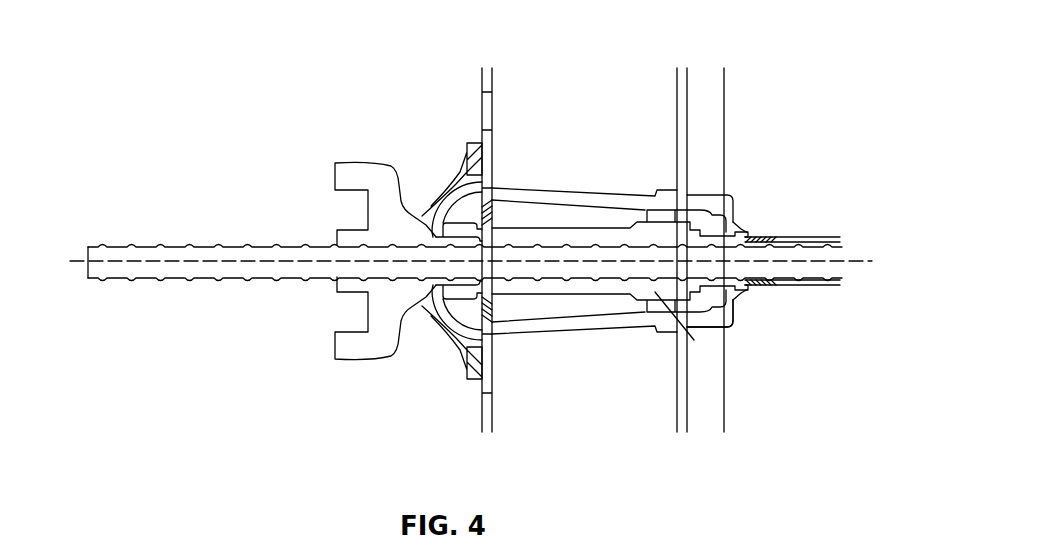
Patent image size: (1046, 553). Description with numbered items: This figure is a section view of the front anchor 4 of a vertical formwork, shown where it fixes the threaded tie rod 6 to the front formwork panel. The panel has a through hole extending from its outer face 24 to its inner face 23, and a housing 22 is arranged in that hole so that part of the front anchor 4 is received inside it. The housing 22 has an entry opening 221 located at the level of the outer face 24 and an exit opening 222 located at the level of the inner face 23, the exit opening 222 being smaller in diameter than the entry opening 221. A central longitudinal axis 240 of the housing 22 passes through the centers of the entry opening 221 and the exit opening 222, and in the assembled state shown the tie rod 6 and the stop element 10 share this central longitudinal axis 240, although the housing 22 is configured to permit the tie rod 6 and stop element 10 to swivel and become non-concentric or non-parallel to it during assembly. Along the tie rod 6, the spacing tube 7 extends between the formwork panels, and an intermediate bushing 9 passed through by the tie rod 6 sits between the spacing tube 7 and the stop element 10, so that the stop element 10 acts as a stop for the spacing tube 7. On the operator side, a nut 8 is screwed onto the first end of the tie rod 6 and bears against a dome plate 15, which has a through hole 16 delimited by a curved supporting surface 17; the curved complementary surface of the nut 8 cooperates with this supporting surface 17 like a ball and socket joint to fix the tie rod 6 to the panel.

The front anchor 4 is at (366, 63).
The tie rod 6 is at (176, 247).
The spacing tube 7 is at (800, 237).
The nut 8 is at (382, 307).
The intermediate bushing 9 is at (746, 236).
The stop element 10 is at (678, 330).
The dome plate 15 is at (453, 188).
The through hole 16 is at (433, 214).
The curved supporting surface 17 is at (433, 335).
The housing 22 is at (600, 200).
The inner face 23 is at (723, 88).
The outer face 24 is at (480, 83).
The entry opening 221 is at (495, 218).
The exit opening 222 is at (722, 318).
The central longitudinal axis 240 is at (78, 262).